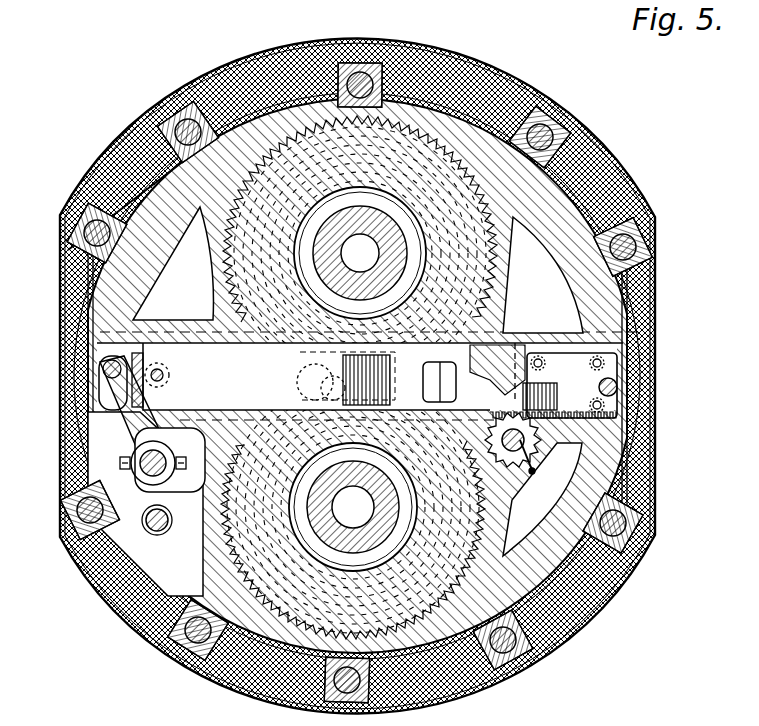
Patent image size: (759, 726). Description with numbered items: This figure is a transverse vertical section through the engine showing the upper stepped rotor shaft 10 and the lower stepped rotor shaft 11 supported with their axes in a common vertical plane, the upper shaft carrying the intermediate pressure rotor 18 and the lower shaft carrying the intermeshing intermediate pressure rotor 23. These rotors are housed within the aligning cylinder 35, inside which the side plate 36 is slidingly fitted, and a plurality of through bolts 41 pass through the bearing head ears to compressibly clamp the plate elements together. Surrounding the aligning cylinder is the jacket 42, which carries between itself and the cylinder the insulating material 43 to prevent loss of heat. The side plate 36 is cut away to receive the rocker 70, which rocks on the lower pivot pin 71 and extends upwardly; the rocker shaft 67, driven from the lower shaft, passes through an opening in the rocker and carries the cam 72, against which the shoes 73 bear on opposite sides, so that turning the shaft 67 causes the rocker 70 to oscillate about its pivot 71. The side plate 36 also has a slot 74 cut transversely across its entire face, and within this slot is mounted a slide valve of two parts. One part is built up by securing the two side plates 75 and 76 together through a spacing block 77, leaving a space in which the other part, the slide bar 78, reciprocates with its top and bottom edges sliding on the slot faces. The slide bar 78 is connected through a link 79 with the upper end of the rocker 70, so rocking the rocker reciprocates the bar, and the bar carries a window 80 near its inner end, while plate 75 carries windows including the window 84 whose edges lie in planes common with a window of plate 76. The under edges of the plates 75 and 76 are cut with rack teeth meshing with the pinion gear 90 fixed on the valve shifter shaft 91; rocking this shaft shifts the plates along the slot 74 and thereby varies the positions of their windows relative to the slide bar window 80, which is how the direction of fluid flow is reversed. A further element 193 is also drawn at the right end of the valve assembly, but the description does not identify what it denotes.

The upper stepped rotor shaft 10 is at (362, 234).
The lower stepped rotor shaft 11 is at (356, 484).
The intermediate pressure rotor 18 is at (360, 251).
The intermediate pressure rotor 23 is at (353, 509).
The aligning cylinder 35 is at (567, 197).
The side plate 36 is at (480, 147).
The through bolts 41 is at (545, 137).
The jacket 42 is at (460, 58).
The insulating material 43 is at (470, 74).
The rocker shaft 67 is at (160, 450).
The rocker 70 is at (97, 400).
The pivot pin 71 is at (158, 533).
The cam 72 is at (97, 560).
The shoes 73 is at (127, 476).
The slot 74 is at (620, 360).
The side plate of slide valve 75 is at (497, 378).
The side plate of slide valve 76 is at (503, 357).
The spacing block 77 is at (555, 391).
The slide bar 78 is at (197, 347).
The link 79 is at (97, 345).
The window 80 is at (300, 384).
The window 84 is at (456, 368).
The pinion gear 90 is at (540, 452).
The valve shifter shaft 91 is at (523, 458).
The bolt 193 is at (617, 388).